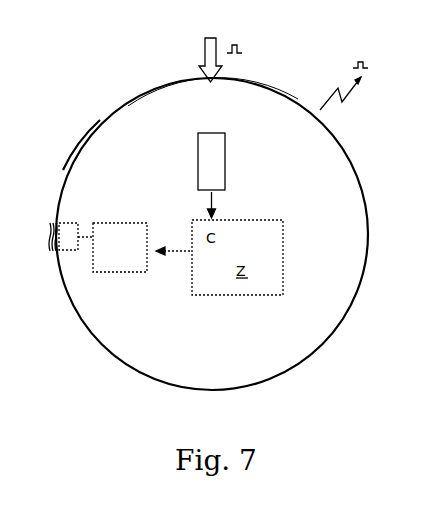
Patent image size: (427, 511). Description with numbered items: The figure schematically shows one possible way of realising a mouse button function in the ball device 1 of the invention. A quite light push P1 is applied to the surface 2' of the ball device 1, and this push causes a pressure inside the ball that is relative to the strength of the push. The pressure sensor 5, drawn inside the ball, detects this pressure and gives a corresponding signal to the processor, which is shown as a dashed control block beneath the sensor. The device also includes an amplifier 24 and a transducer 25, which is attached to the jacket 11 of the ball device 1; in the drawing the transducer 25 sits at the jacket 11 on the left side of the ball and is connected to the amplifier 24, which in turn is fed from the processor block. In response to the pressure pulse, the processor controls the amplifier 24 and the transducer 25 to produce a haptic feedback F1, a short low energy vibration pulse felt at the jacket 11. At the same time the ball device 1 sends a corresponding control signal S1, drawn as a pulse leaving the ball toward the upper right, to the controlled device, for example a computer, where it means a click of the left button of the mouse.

The ball device 1 is at (115, 128).
The jacket 11 is at (75, 155).
The surface 2' is at (213, 84).
The pressure sensor 5 is at (198, 152).
The amplifier 24 is at (93, 258).
The transducer 25 is at (66, 252).
The push P1 is at (220, 47).
The control signal S1 is at (353, 81).
The haptic feedback F1 is at (48, 228).